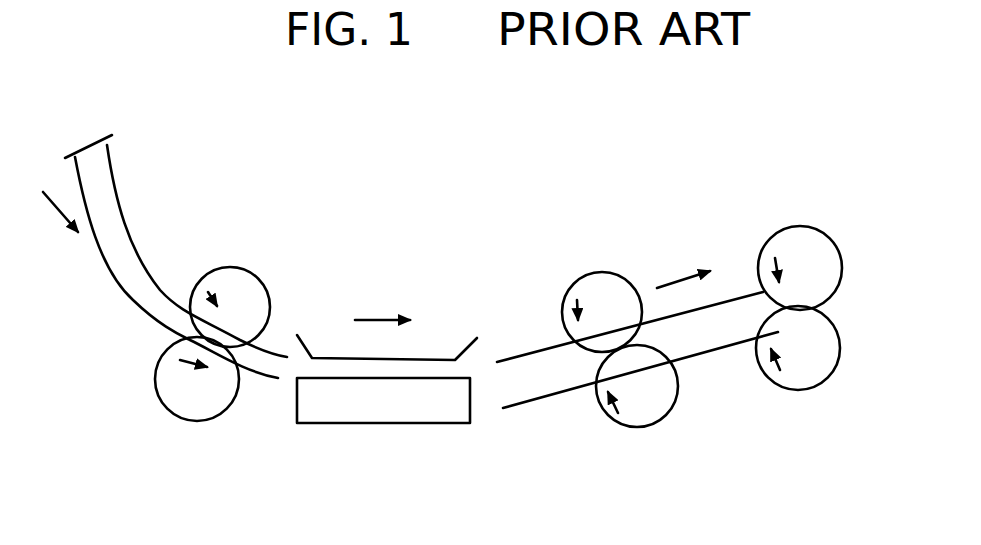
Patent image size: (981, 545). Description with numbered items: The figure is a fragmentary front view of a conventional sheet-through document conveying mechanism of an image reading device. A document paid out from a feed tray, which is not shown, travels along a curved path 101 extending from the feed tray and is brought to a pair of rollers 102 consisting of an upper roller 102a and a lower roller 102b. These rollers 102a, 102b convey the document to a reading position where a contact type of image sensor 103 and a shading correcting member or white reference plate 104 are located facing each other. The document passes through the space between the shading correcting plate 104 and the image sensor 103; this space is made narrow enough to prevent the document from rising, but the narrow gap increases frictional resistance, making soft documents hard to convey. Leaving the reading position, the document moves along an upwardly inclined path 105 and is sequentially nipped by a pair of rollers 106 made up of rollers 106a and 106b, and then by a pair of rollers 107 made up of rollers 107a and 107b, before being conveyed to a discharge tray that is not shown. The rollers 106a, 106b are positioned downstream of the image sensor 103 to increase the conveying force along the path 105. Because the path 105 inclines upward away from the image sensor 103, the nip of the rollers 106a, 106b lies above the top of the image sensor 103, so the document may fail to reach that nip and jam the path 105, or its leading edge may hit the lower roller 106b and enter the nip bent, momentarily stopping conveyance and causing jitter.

The curved path 101 is at (137, 247).
The pair of rollers 102 is at (201, 363).
The roller 102a is at (247, 283).
The roller 102b is at (198, 420).
The contact type of image sensor 103 is at (380, 420).
The shading correcting member or white reference plate 104 is at (438, 360).
The upwardly inclined path 105 is at (569, 385).
The pair of rollers 106 is at (664, 351).
The roller 106a is at (615, 277).
The roller 106b is at (643, 417).
The pair of rollers 107 is at (834, 326).
The roller 107a is at (803, 238).
The roller 107b is at (817, 368).